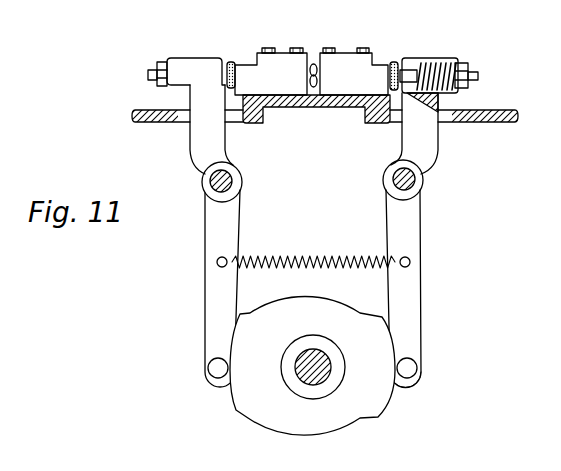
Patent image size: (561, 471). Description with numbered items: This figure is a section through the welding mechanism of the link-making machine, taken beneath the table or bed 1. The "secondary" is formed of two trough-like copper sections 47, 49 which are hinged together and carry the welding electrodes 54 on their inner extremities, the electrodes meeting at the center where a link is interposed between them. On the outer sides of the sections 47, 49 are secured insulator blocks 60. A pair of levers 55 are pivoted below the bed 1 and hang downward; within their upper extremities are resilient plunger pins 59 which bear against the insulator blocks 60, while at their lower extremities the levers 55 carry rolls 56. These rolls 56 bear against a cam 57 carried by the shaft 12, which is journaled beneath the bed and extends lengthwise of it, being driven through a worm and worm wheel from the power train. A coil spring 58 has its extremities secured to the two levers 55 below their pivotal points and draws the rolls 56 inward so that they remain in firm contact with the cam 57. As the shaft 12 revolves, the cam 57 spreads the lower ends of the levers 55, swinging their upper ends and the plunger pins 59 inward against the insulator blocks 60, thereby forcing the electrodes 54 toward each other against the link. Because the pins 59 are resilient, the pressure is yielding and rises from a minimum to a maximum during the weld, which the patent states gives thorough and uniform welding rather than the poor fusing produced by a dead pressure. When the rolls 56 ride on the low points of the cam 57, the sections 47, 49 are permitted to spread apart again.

The table or bed 1 is at (143, 110).
The shaft 12 is at (322, 378).
The secondary section 47 is at (271, 71).
The secondary section 49 is at (354, 71).
The welding electrodes 54 is at (304, 86).
The levers 55 is at (205, 230).
The rolls 56 is at (208, 372).
The cam 57 is at (417, 391).
The coil spring 58 is at (313, 256).
The resilient plunger pins 59 is at (153, 72).
The insulator blocks 60 is at (231, 62).